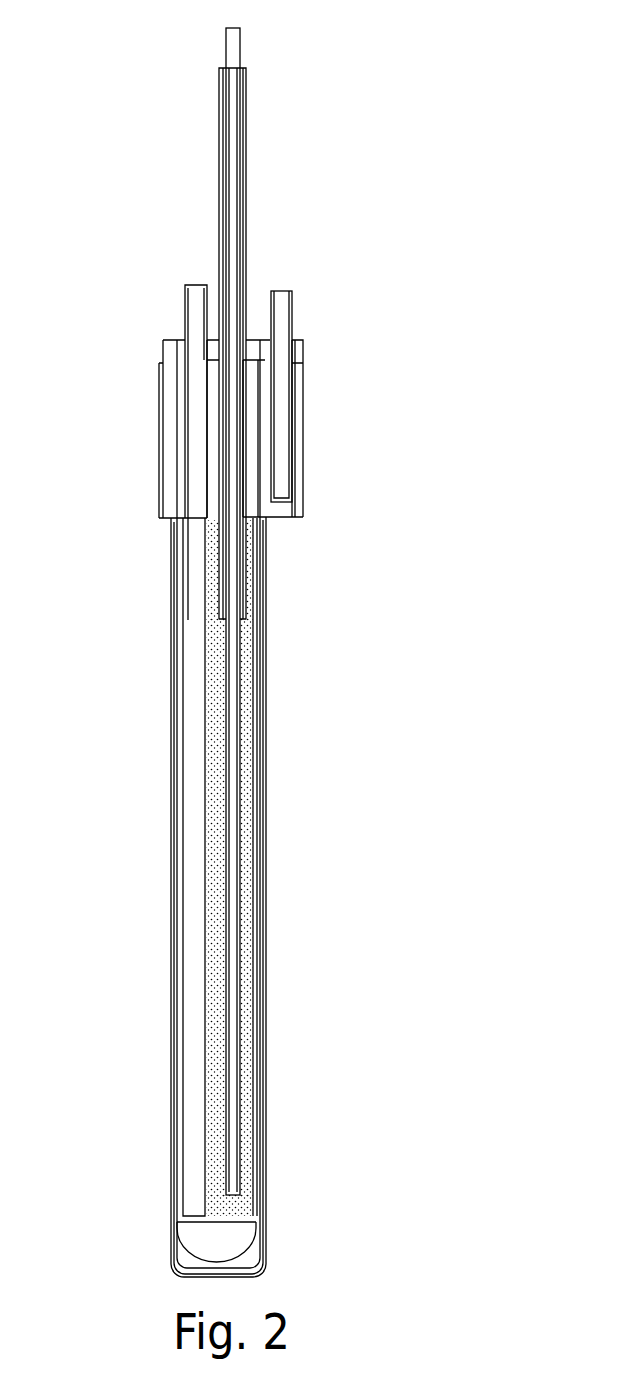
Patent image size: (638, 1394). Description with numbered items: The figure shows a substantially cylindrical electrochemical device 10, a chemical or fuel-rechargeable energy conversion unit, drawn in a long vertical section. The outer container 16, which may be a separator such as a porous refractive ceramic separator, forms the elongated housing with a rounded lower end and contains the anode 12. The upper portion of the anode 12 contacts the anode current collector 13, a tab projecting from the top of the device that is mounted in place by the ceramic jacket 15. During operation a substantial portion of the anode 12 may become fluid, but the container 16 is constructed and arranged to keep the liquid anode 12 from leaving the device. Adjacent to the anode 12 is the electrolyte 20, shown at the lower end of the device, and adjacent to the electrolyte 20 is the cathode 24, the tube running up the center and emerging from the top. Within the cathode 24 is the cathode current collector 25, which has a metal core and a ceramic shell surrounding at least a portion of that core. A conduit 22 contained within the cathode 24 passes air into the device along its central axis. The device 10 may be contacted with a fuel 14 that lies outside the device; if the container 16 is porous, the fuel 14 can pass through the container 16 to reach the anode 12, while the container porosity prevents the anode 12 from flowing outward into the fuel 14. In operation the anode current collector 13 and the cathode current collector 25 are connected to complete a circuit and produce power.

The device 10 is at (306, 668).
The anode 12 is at (250, 833).
The anode current collector 13 is at (276, 294).
The fuel 14 is at (118, 815).
The ceramic jacket 15 is at (293, 340).
The outer container 16 is at (265, 978).
The electrolyte 20 is at (207, 1222).
The conduit 22 is at (226, 50).
The cathode 24 is at (247, 190).
The cathode current collector 25 is at (190, 312).